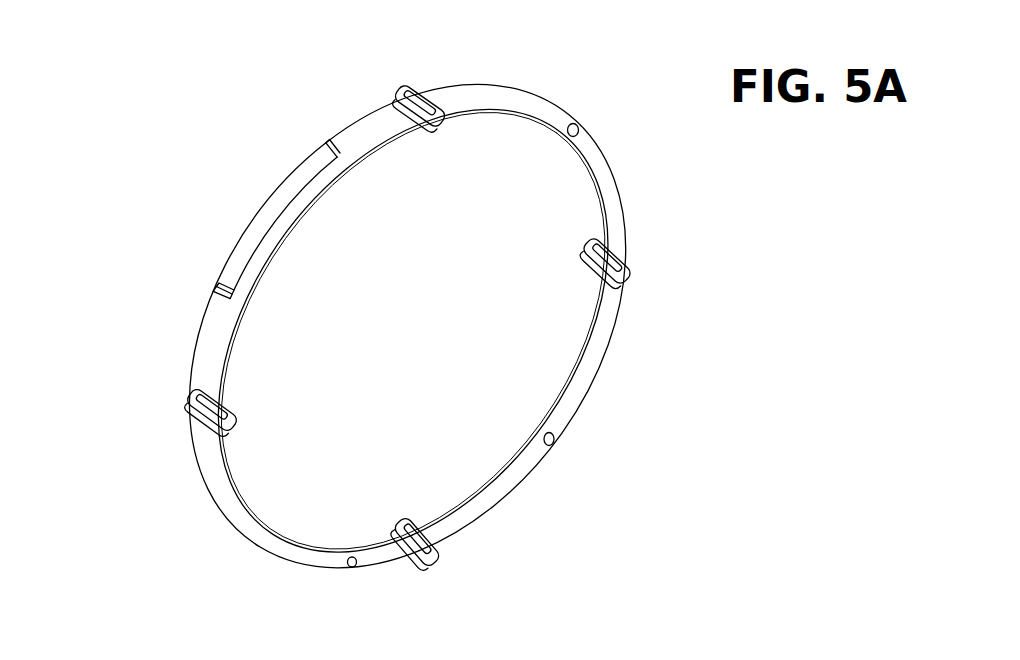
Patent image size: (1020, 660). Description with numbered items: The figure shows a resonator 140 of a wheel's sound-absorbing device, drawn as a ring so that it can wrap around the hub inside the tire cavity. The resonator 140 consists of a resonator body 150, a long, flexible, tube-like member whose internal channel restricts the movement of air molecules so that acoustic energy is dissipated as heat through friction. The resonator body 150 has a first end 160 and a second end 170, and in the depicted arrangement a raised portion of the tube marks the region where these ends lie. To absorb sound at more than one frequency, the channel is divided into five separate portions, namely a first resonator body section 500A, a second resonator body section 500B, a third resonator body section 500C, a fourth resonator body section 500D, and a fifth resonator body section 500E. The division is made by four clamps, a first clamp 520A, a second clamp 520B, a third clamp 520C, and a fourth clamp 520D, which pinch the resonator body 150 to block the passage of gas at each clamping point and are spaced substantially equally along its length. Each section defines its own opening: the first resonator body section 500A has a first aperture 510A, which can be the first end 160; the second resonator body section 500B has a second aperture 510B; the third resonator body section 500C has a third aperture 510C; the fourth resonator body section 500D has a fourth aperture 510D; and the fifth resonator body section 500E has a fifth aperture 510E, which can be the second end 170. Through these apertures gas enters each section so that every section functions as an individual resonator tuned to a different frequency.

The resonator 140 is at (433, 330).
The resonator body 150 is at (615, 328).
The first end 160 is at (232, 302).
The second end 170 is at (328, 140).
The first resonator body section 500A is at (376, 145).
The second resonator body section 500B is at (565, 118).
The third resonator body section 500C is at (582, 388).
The fourth resonator body section 500D is at (230, 512).
The fifth resonator body section 500E is at (235, 258).
The first aperture 510A is at (147, 325).
The second aperture 510B is at (590, 138).
The third aperture 510C is at (551, 448).
The fourth aperture 510D is at (333, 565).
The fifth aperture 510E is at (333, 147).
The first clamp 520A is at (403, 88).
The second clamp 520B is at (634, 268).
The third clamp 520C is at (430, 563).
The fourth clamp 520D is at (183, 402).